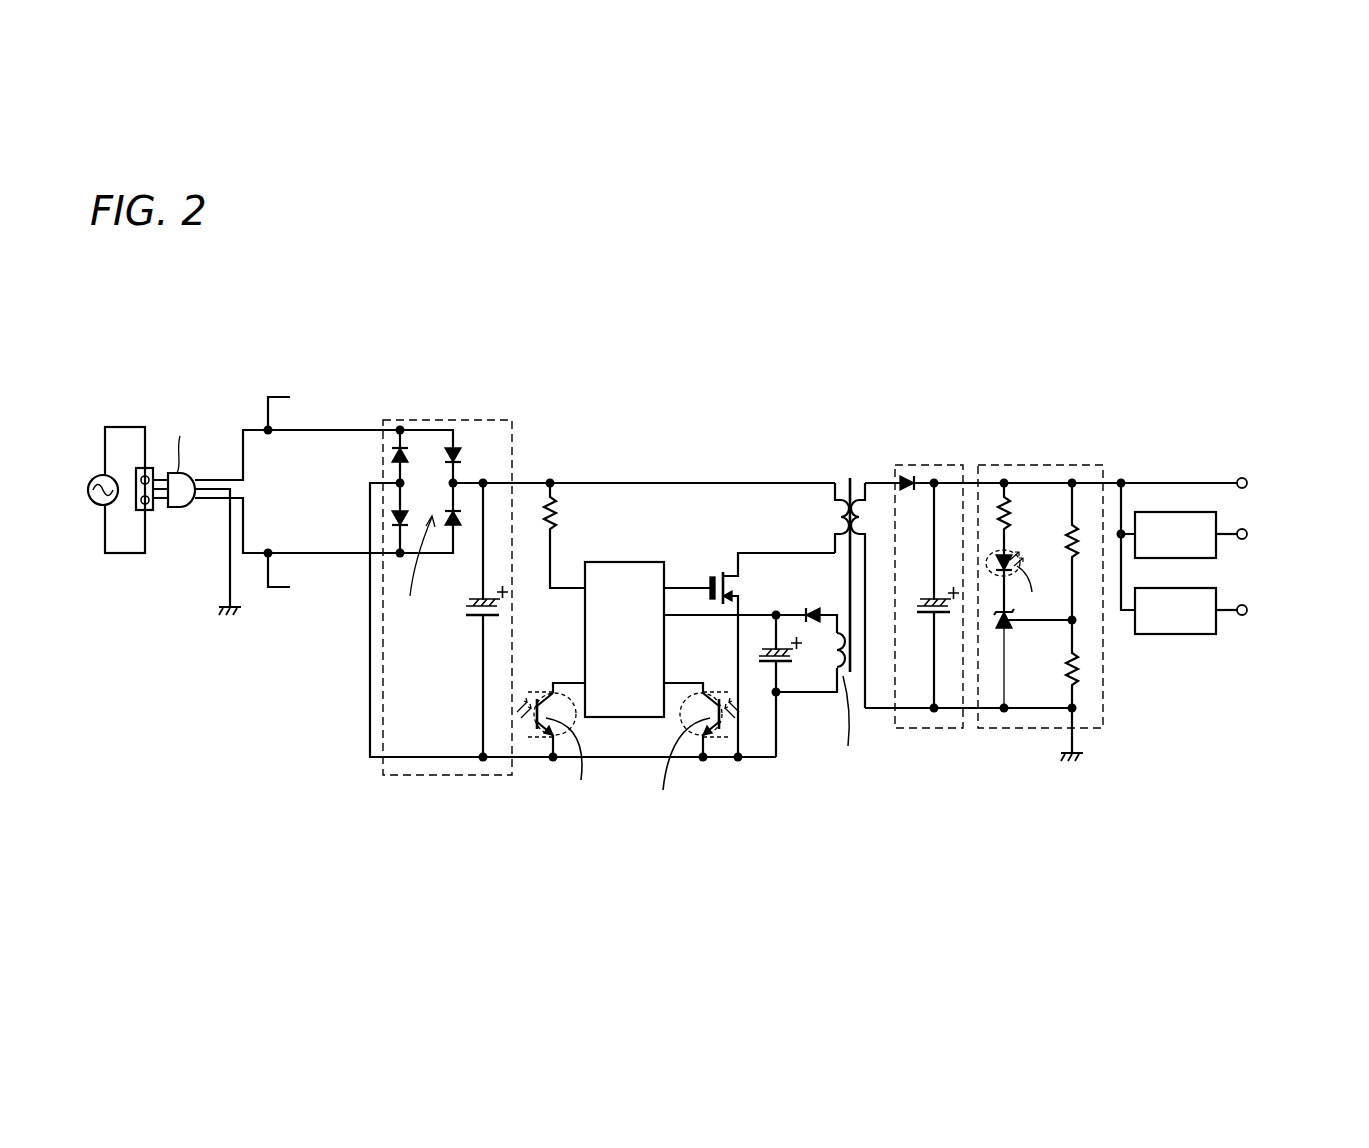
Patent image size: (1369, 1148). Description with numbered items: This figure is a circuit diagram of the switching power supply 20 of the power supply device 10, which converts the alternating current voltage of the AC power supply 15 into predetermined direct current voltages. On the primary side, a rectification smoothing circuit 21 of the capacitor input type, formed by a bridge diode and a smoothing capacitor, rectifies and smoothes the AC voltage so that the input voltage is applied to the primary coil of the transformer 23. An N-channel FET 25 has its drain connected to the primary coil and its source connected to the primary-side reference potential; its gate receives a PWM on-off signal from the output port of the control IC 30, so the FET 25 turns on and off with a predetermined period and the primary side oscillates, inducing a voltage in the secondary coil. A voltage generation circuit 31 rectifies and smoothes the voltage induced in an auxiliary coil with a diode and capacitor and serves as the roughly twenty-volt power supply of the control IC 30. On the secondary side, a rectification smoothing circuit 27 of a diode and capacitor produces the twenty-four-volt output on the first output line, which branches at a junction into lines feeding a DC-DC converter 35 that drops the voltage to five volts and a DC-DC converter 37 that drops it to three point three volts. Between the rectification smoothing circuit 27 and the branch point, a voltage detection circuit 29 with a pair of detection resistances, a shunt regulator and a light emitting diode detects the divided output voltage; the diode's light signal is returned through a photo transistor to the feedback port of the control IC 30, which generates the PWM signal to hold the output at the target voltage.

The power supply device 10 is at (358, 817).
The AC power supply 15 is at (100, 505).
The switching power supply 20 is at (572, 402).
The rectification smoothing circuit 21 is at (488, 420).
The transformer 23 is at (865, 512).
The FET 25 is at (722, 551).
The rectification smoothing circuit 27 is at (952, 465).
The voltage detection circuit 29 is at (1043, 465).
The control IC 30 is at (624, 562).
The voltage generation circuit 31 is at (803, 703).
The DC-DC converter 35 is at (1172, 512).
The DC-DC converter 37 is at (1170, 634).